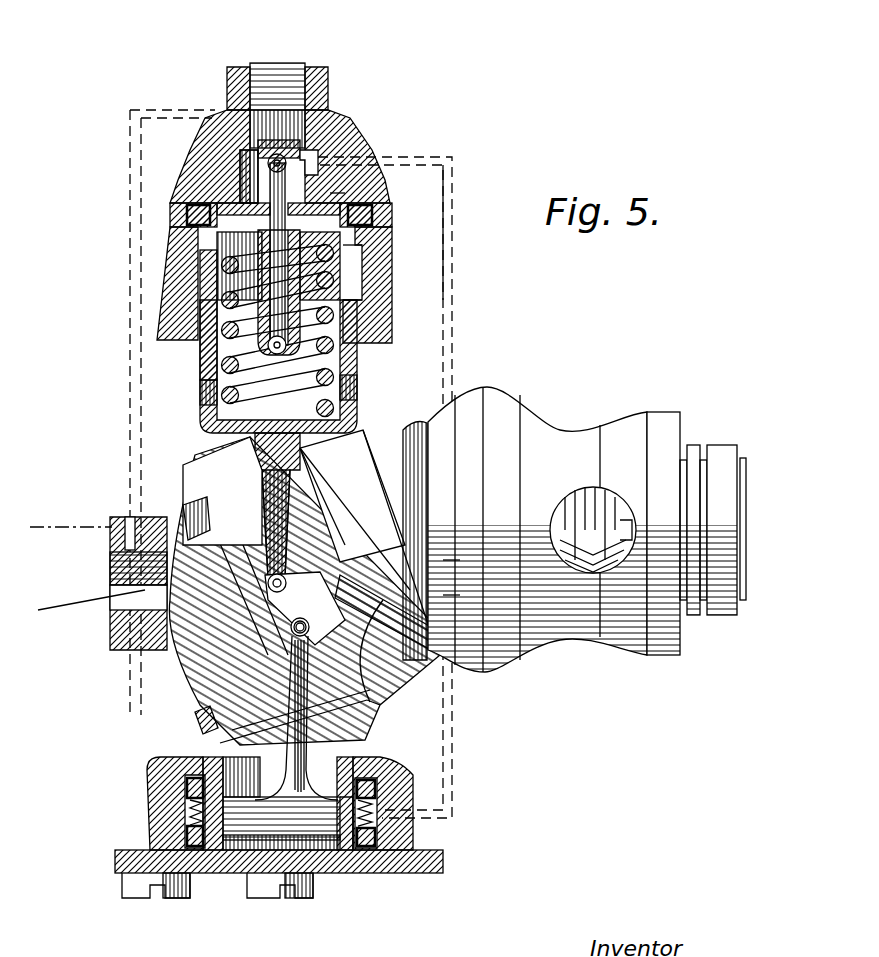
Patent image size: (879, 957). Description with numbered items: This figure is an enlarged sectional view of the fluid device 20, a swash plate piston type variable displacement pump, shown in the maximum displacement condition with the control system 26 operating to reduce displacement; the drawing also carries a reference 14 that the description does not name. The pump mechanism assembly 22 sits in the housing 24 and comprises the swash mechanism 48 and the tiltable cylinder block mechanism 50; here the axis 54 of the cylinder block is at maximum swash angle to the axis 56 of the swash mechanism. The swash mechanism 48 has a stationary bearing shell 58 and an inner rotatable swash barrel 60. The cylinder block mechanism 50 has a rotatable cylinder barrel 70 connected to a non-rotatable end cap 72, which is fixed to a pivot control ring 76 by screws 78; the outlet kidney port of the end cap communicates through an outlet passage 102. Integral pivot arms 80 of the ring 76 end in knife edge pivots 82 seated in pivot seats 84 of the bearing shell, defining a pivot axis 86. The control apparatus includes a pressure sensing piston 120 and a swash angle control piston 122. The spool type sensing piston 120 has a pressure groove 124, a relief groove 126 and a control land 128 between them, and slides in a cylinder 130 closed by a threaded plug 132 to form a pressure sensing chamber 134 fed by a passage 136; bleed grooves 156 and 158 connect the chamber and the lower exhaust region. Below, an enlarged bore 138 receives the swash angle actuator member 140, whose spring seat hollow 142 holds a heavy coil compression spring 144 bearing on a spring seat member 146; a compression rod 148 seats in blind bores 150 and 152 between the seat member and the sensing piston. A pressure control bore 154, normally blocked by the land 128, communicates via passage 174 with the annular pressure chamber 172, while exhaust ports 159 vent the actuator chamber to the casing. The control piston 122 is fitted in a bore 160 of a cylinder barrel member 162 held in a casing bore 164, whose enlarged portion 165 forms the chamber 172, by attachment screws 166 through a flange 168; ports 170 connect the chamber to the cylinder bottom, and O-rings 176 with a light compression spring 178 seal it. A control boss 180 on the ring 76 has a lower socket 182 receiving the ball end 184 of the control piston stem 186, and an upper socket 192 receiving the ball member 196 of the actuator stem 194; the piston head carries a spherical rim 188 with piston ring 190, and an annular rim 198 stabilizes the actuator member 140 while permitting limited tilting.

The shaft 14 is at (495, 412).
The fluid device 20 is at (458, 815).
The variable displacement pump mechanism assembly 22 is at (455, 430).
The housing 24 is at (340, 130).
The control system 26 is at (400, 322).
The swash mechanism 48 is at (600, 560).
The cylinder block mechanism 50 is at (365, 712).
The axis of the cylinder block mechanism 54 is at (91, 608).
The axis of the swash mechanism 56 is at (68, 524).
The bearing shell 58 is at (540, 430).
The swash barrel 60 is at (720, 443).
The cylinder barrel 70 is at (400, 660).
The cylinder end cap 72 is at (180, 680).
The pivot control ring 76 is at (250, 672).
The screws 78 is at (195, 490).
The pivot arms 80 is at (370, 620).
The knife edge pivots 82 is at (440, 567).
The pivot seats 84 is at (380, 572).
The pivot axis 86 is at (440, 595).
The outlet passage 102 is at (118, 578).
The pressure sensing piston 120 is at (360, 200).
The swash angle control piston 122 is at (310, 790).
The pressure groove 124 is at (240, 145).
The relief groove 126 is at (250, 180).
The control land 128 is at (245, 165).
The cylinder 130 is at (272, 200).
The threaded plug 132 is at (280, 70).
The pressure sensing chamber 134 is at (300, 112).
The passage 136 is at (175, 235).
The enlarged bore 138 is at (345, 250).
The swash angle actuator member 140 is at (210, 418).
The spring seat hollow 142 is at (335, 365).
The coil compression spring 144 is at (335, 270).
The spring seat member 146 is at (365, 232).
The compression rod 148 is at (230, 240).
The blind bore 150 is at (360, 296).
The blind bore 152 is at (318, 162).
The pressure control bore 154 is at (287, 160).
The bleed grooves 156 is at (300, 142).
The bleed grooves 158 is at (370, 183).
The exhaust ports 159 is at (205, 392).
The bore 160 is at (305, 875).
The cylinder barrel member 162 is at (366, 785).
The bore 164 is at (360, 760).
The enlarged portion 165 is at (395, 785).
The attachment screws 166 is at (135, 890).
The attachment flange 168 is at (410, 866).
The ports 170 is at (355, 800).
The annular pressure chamber 172 is at (376, 812).
The passage 174 is at (446, 272).
The sealing O-rings 176 is at (187, 782).
The light compression spring 178 is at (190, 810).
The control boss 180 is at (335, 590).
The lower segmental spherical socket 182 is at (310, 628).
The universal ball end portion 184 is at (290, 627).
The axial stem 186 is at (262, 695).
The segmental spherical rim 188 is at (231, 803).
The piston ring 190 is at (250, 815).
The upper segmented spherical socket 192 is at (245, 592).
The axial stem 194 is at (268, 530).
The universal ball member 196 is at (267, 580).
The annular rim 198 is at (205, 310).